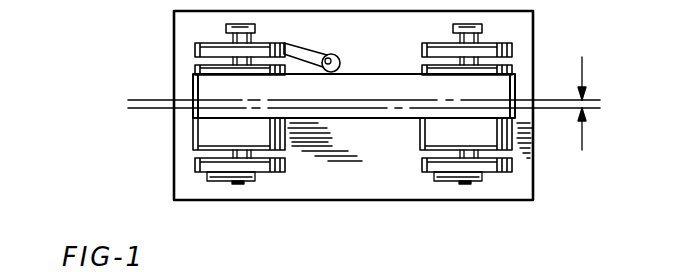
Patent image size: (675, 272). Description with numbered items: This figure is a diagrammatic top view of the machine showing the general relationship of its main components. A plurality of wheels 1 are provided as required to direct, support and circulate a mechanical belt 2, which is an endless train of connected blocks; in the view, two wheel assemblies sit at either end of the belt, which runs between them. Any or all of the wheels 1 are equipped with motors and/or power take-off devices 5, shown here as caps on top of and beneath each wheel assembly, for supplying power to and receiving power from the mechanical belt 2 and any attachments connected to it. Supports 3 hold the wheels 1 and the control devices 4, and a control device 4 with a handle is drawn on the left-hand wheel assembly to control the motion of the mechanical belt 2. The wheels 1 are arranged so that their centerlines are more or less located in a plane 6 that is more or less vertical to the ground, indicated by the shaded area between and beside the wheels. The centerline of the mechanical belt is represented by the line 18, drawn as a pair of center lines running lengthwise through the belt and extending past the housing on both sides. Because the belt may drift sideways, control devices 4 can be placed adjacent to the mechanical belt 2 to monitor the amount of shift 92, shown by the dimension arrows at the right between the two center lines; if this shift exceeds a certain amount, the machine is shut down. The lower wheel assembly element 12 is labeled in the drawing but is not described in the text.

The wheels 1 is at (528, 133).
The mechanical belt 2 is at (405, 118).
The supports 3 is at (204, 29).
The control devices 4 is at (312, 50).
The motors and/or power take-off devices 5 is at (240, 23).
The plane 6 is at (385, 118).
The lower bearing assembly 12 is at (193, 133).
The centerline of the mechanical belt 18 is at (362, 103).
The shift 92 is at (583, 62).